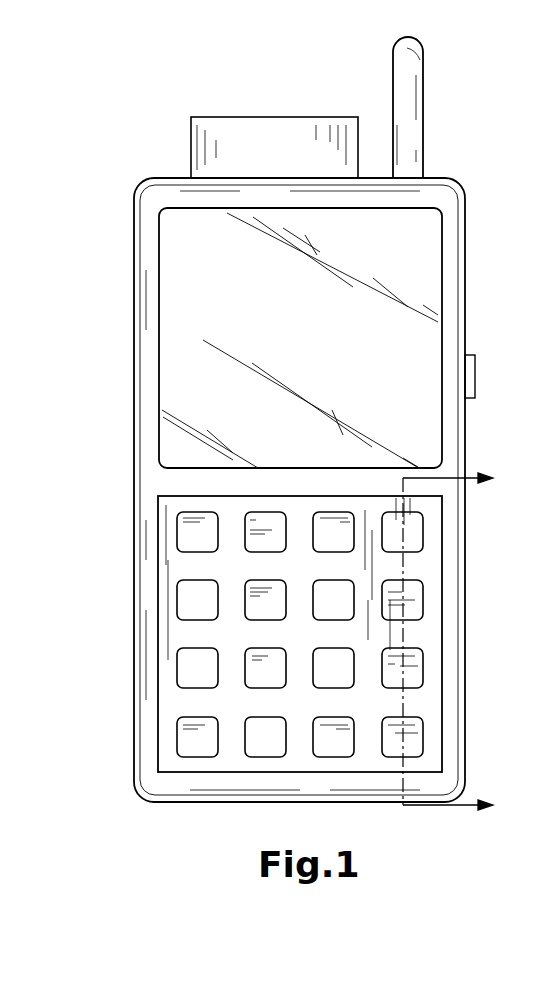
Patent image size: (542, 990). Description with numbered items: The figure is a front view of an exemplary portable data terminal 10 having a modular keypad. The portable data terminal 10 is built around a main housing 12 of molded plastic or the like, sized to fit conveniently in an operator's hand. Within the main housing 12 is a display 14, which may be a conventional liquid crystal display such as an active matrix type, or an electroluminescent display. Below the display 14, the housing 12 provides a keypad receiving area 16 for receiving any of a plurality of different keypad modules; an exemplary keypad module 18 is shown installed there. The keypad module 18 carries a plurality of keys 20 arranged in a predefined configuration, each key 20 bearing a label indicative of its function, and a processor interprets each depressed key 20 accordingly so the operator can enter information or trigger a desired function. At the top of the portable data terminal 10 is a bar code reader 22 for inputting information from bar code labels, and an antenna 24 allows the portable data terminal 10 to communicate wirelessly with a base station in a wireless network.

The portable data terminal 10 is at (83, 198).
The main housing 12 is at (134, 385).
The display 14 is at (183, 290).
The keypad receiving area 16 is at (475, 376).
The keypad module 18 is at (178, 700).
The keys 20 is at (187, 600).
The bar code reader 22 is at (220, 117).
The antenna 24 is at (410, 100).